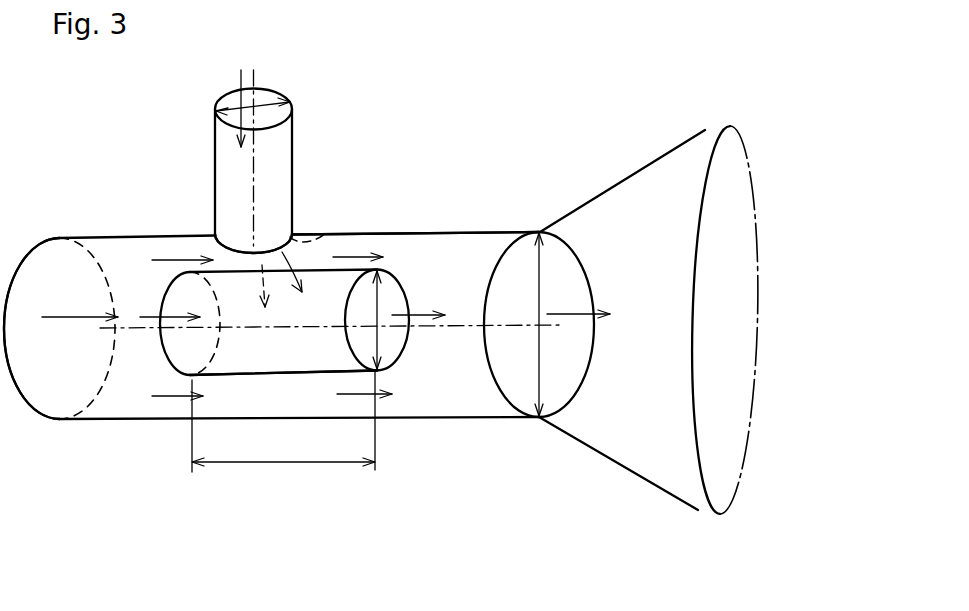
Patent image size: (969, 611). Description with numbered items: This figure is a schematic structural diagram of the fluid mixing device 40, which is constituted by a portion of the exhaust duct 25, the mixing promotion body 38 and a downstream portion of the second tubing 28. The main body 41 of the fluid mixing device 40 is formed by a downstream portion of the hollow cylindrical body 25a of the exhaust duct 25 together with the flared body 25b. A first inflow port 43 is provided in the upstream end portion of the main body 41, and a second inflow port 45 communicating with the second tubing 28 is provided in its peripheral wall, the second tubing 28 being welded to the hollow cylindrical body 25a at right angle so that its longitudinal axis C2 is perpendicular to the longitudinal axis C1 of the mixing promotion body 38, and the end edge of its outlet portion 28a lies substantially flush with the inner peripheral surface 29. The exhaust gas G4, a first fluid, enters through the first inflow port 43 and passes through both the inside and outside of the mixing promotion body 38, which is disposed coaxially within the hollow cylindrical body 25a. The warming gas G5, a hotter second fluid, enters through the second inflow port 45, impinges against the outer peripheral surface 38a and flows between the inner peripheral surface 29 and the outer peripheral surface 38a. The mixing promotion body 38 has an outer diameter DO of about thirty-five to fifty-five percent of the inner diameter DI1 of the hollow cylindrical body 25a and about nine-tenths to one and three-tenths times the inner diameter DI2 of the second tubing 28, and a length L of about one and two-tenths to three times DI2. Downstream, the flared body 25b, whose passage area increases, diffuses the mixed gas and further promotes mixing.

The exhaust duct 25 is at (383, 347).
The hollow cylindrical body 25a is at (135, 421).
The flared body 25b is at (650, 486).
The second tubing 28 is at (278, 148).
The outlet portion 28a is at (214, 233).
The inner peripheral surface 29 is at (452, 239).
The mixing promotion body 38 is at (180, 364).
The outer peripheral surface 38a is at (256, 377).
The fluid mixing device 40 is at (438, 164).
The main body 41 is at (484, 421).
The first inflow port 43 is at (42, 247).
The second inflow port 45 is at (331, 233).
The longitudinal axis C1 is at (172, 341).
The longitudinal axis C2 is at (262, 74).
The inner diameter DI1 is at (537, 256).
The inner diameter DI2 is at (272, 100).
The outer diameter DO is at (378, 294).
The length L is at (283, 422).
The exhaust gas G4 is at (62, 316).
The warming gas G5 is at (240, 78).